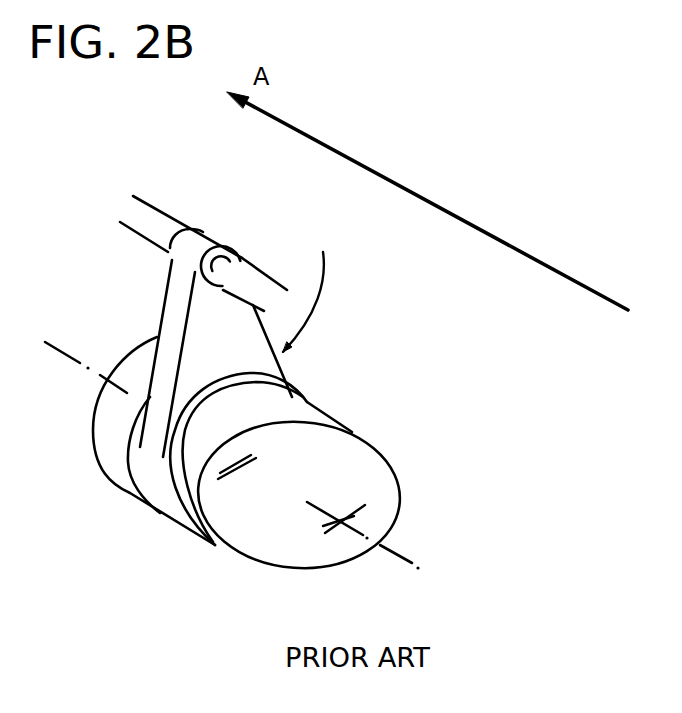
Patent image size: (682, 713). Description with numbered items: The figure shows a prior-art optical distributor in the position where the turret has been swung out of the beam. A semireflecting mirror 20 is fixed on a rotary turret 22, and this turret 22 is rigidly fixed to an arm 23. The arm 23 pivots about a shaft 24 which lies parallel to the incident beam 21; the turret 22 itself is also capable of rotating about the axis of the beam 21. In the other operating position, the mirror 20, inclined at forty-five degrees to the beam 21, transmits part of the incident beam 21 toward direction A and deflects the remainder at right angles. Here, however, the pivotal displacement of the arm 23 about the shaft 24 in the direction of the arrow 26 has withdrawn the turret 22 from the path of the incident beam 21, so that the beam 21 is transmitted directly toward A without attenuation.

The semireflecting mirror 20 is at (372, 472).
The incident beam 21 is at (626, 280).
The rotary turret 22 is at (110, 443).
The arm 23 is at (173, 303).
The shaft 24 is at (197, 192).
The arrow 26 is at (327, 298).